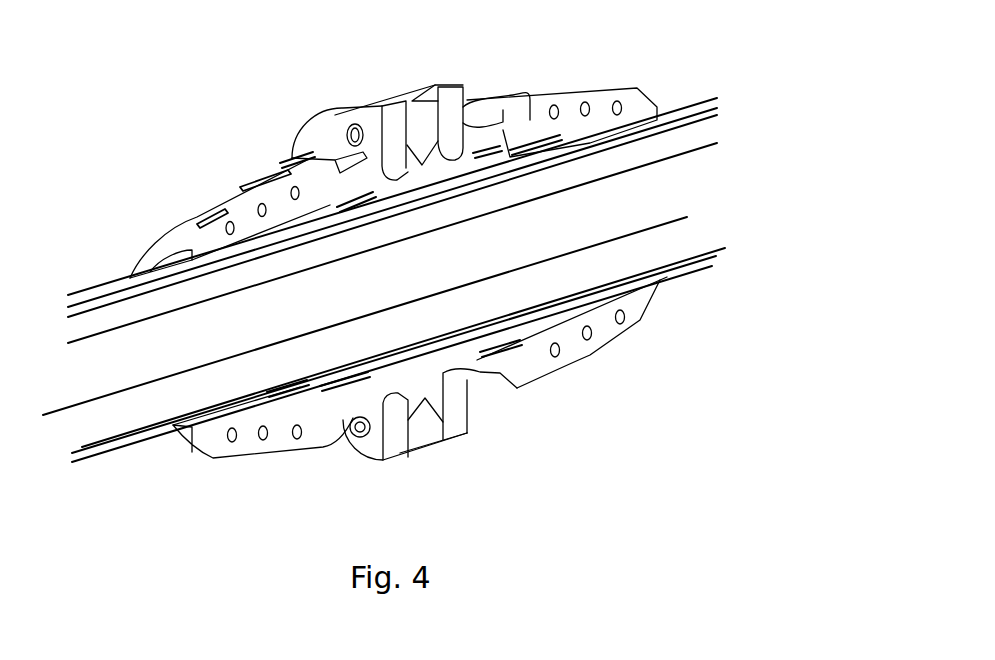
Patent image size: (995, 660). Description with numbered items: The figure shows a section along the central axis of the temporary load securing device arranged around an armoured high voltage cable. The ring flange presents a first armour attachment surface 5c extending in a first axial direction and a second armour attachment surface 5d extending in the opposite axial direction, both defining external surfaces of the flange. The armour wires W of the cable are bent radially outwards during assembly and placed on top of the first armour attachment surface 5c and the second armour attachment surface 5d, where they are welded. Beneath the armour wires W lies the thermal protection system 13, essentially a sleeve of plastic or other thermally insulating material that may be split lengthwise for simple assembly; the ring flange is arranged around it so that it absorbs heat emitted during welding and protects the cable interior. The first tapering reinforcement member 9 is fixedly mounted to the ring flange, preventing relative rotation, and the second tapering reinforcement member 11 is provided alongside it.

The thermal protection system 13 is at (245, 203).
The first tapering reinforcement member 9 is at (257, 178).
The armour wires W is at (323, 207).
The first armour attachment surface 5c is at (365, 197).
The second tapering reinforcement member 11 is at (517, 90).
The second armour attachment surface 5d is at (507, 157).